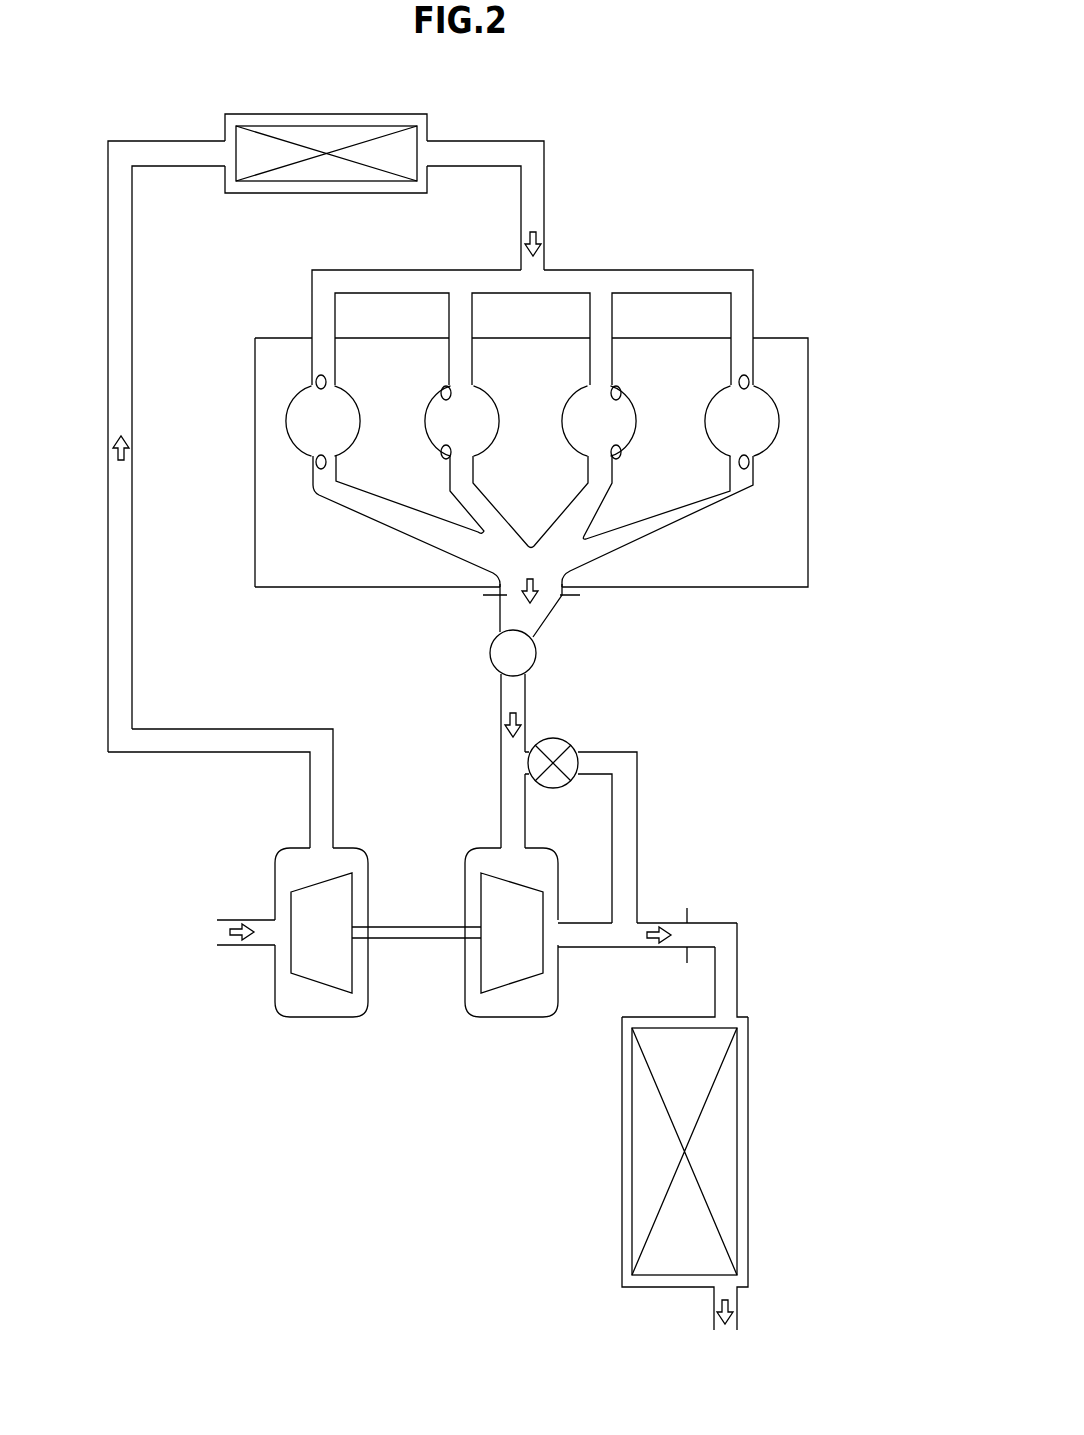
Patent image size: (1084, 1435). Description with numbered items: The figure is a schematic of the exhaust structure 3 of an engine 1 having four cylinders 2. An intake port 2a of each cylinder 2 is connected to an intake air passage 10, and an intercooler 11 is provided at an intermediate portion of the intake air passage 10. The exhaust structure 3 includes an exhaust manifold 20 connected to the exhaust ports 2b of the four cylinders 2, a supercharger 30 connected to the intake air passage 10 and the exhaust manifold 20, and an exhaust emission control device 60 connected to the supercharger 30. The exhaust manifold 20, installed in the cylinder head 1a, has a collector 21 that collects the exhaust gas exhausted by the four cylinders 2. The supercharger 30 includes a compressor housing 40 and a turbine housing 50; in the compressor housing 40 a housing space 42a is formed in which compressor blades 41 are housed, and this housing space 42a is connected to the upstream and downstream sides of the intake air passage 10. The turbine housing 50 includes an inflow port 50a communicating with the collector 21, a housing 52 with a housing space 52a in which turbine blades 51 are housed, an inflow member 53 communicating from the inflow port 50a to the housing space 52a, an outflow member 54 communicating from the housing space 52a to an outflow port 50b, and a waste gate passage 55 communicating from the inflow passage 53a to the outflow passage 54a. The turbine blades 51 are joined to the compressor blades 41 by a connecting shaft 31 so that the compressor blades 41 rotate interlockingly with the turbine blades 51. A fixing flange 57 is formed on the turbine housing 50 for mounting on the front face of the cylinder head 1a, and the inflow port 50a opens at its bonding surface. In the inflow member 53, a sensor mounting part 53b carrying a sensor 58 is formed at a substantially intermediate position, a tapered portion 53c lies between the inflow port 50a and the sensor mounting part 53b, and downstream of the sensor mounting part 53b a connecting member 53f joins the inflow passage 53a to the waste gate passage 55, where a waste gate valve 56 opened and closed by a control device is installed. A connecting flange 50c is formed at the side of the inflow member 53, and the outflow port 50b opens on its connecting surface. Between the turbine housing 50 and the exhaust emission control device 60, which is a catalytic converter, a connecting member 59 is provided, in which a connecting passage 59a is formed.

The engine 1 is at (252, 379).
The cylinder head 1a is at (256, 510).
The cylinders 2 is at (314, 438).
The intake port 2a is at (318, 378).
The exhaust ports 2b is at (318, 460).
The exhaust structure 3 is at (701, 700).
The intake air passage 10 is at (177, 141).
The intercooler 11 is at (333, 170).
The exhaust manifold 20 is at (359, 536).
The collector 21 is at (515, 556).
The supercharger 30 is at (415, 1028).
The connecting shaft 31 is at (420, 935).
The compressor housing 40 is at (323, 1023).
The compressor blades 41 is at (306, 944).
The housing space 42a is at (305, 1013).
The turbine housing 50 is at (480, 1023).
The inflow port 50a is at (505, 594).
The outflow port 50b is at (690, 930).
The connecting flange 50c is at (690, 930).
The turbine blades 51 is at (494, 944).
The housing 52 is at (533, 968).
The housing space 52a is at (518, 1013).
The inflow member 53 is at (529, 722).
The inflow passage 53a is at (510, 752).
The sensor mounting part 53b is at (537, 657).
The tapered portion 53c is at (547, 623).
The connecting member 53f is at (513, 776).
The outflow member 54 is at (593, 951).
The outflow passage 54a is at (638, 946).
The waste gate passage 55 is at (627, 810).
The waste gate valve 56 is at (573, 763).
The fixing flange 57 is at (573, 597).
The sensor 58 is at (502, 658).
The connecting member 59 is at (751, 970).
The connecting passage 59a is at (733, 963).
The exhaust emission control device 60 is at (645, 1163).